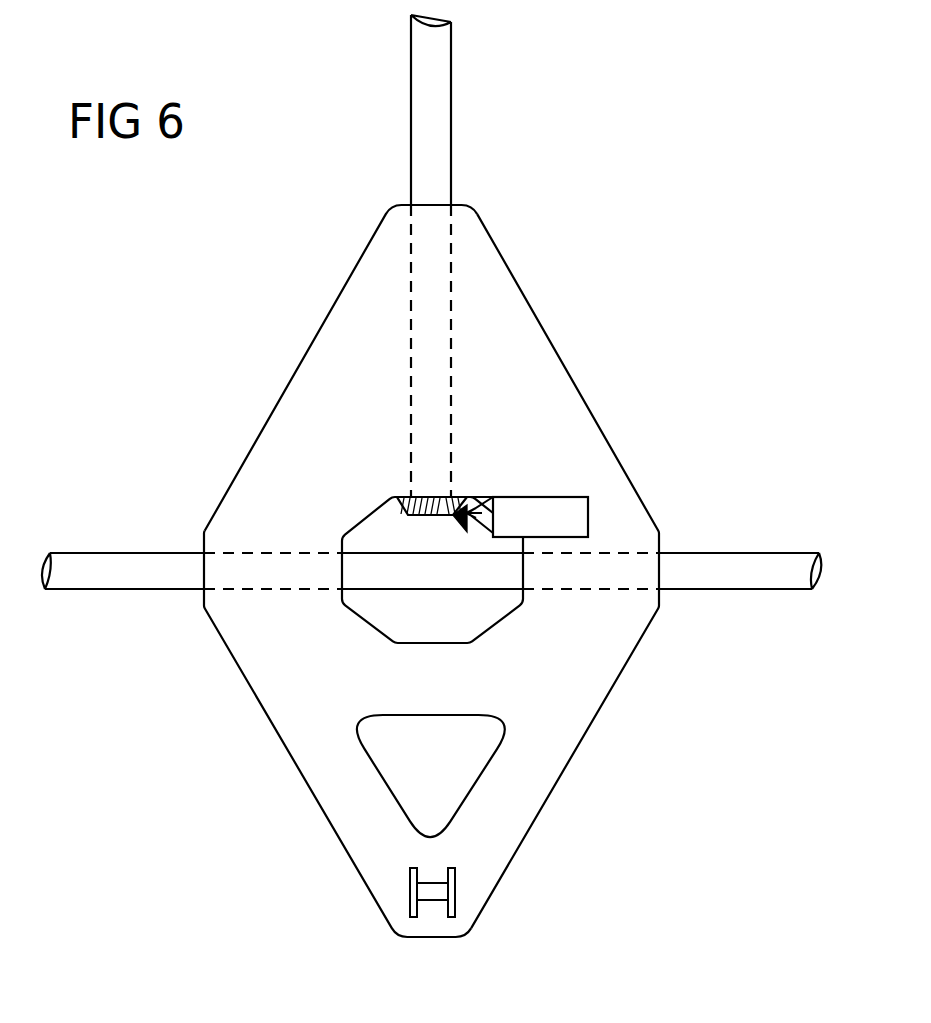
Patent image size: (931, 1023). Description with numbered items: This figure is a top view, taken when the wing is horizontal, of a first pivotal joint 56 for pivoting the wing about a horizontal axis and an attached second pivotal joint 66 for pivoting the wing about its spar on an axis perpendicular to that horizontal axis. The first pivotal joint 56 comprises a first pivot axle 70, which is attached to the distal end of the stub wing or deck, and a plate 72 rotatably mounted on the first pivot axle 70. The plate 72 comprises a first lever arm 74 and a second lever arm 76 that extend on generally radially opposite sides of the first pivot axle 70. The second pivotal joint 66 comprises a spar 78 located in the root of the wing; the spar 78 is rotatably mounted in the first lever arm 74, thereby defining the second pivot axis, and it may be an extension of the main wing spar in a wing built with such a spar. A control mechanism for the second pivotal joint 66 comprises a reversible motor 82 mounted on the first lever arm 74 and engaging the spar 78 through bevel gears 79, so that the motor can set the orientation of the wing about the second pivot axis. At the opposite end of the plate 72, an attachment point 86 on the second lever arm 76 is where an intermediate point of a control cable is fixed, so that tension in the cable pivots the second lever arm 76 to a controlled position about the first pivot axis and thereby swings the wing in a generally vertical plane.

The first pivotal joint 56 is at (169, 342).
The second pivotal joint 66 is at (433, 335).
The first pivot axle 70 is at (737, 572).
The plate 72 is at (538, 409).
The first lever arm 74 is at (350, 330).
The second lever arm 76 is at (290, 678).
The spar 78 is at (437, 65).
The bevel gears 79 is at (397, 499).
The reversible motor 82 is at (555, 515).
The cable attachment 86 is at (433, 902).